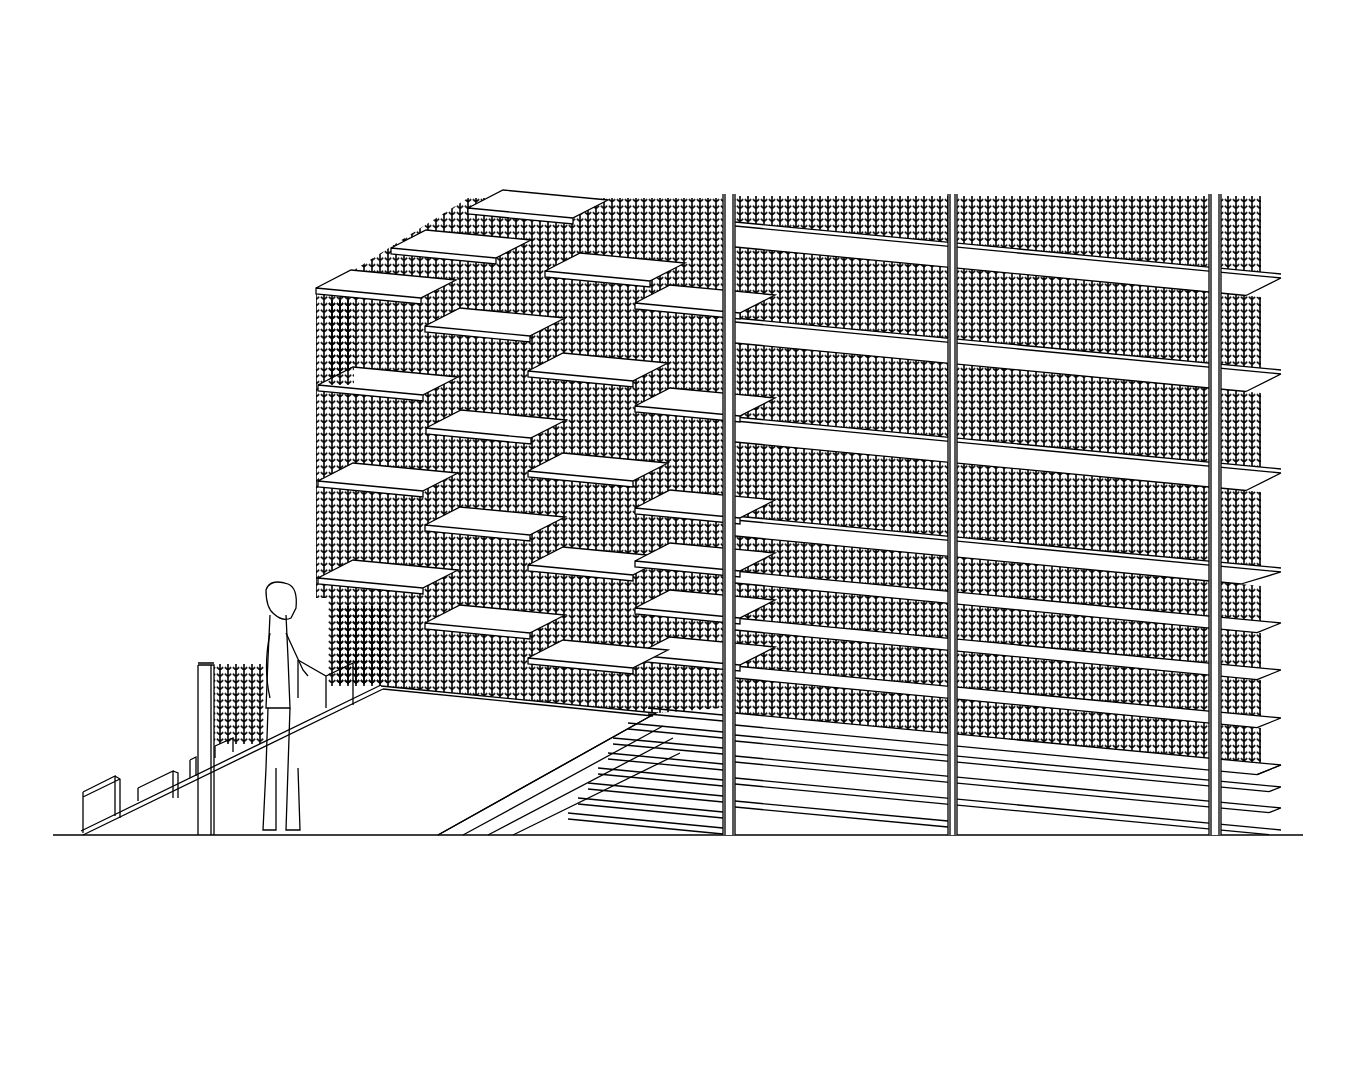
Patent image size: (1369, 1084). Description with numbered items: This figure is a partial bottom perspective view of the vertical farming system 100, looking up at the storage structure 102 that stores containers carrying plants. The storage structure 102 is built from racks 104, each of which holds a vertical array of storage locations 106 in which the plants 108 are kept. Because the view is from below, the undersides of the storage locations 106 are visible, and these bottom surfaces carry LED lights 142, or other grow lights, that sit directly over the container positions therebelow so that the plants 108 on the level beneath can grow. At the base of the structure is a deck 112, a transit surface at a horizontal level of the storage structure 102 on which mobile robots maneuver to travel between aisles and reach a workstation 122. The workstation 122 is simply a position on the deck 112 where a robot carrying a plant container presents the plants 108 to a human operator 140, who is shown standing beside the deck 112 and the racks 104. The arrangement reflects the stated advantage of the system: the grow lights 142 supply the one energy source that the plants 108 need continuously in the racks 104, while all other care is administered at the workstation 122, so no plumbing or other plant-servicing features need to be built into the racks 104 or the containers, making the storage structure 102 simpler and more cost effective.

The vertical farming system 100 is at (283, 140).
The storage structure 102 is at (787, 165).
The rack 104 is at (308, 279).
The storage location 106 is at (312, 374).
The plant 108 is at (318, 311).
The deck 112 is at (183, 765).
The workstation 122 is at (223, 637).
The human operator 140 is at (262, 582).
The LED light 142 is at (312, 388).